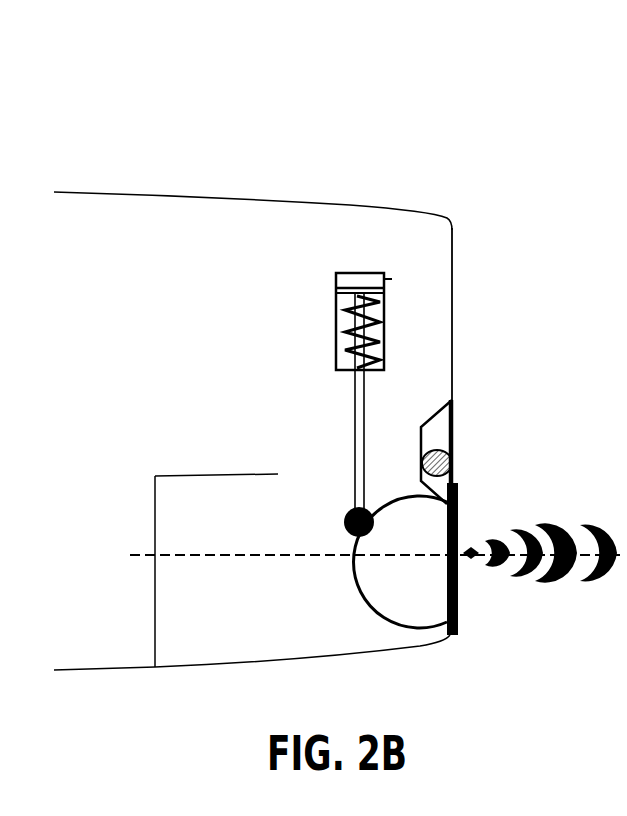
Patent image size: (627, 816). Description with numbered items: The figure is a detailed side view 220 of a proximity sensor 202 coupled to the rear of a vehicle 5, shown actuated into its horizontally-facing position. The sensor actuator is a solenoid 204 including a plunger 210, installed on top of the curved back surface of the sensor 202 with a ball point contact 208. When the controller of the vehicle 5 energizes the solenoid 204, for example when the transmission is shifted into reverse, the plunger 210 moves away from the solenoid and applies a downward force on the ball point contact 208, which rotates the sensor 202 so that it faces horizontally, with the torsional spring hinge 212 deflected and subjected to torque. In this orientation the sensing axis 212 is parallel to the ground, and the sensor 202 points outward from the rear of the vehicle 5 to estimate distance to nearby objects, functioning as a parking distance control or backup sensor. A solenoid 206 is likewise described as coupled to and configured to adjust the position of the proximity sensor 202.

The actuator assembly 220 is at (338, 78).
The housing wall 5 is at (460, 223).
The spring-loaded cylinder 204 is at (357, 272).
The actuator rod 210 is at (353, 437).
The pivot joint 208 is at (347, 513).
The latch 206 is at (455, 432).
The ball valve member 202 is at (374, 607).
The central axis 212 is at (250, 556).